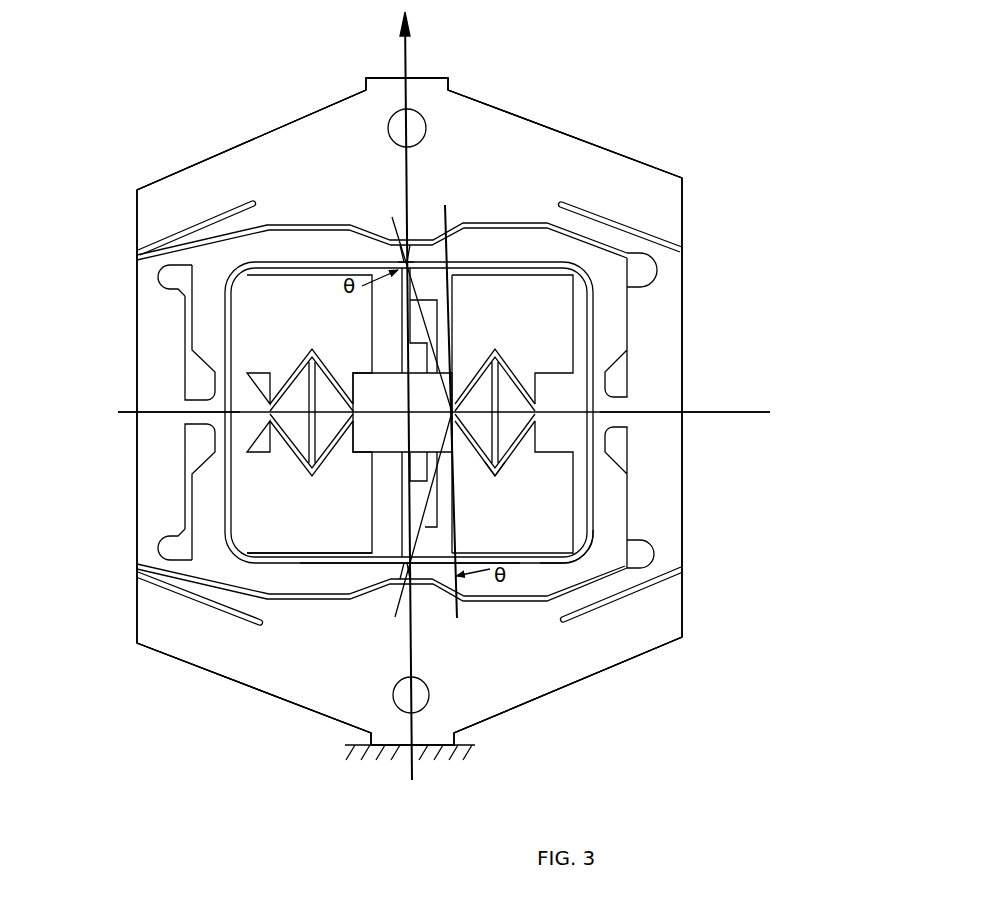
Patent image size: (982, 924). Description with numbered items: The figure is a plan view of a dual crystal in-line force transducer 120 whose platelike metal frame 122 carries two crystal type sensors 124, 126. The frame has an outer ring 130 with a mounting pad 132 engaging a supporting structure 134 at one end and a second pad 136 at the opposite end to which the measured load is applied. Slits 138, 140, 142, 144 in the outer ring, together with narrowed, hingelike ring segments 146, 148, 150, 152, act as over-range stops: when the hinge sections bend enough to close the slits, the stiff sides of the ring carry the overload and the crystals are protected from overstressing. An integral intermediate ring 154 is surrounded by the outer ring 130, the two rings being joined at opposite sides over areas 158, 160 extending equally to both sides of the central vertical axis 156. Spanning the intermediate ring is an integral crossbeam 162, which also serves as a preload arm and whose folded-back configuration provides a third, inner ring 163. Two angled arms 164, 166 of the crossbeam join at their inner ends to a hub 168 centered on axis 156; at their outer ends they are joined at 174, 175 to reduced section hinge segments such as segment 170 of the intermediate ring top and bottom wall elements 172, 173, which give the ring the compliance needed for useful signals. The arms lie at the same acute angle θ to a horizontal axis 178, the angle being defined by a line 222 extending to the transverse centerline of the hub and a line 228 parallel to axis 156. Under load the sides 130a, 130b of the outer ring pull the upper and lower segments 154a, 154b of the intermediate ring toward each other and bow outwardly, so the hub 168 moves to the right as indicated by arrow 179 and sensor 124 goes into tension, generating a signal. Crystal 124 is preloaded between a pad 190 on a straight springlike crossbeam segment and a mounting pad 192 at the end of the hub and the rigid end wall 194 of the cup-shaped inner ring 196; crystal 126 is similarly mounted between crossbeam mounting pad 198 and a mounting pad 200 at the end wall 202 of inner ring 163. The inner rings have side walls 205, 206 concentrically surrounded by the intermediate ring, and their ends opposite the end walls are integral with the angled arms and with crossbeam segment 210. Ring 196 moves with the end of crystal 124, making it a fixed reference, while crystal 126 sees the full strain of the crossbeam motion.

The transducer 120 is at (178, 57).
The metal frame 122 is at (535, 115).
The crystal type sensor 124 is at (300, 372).
The crystal type sensor 126 is at (462, 376).
The outer ring 130 is at (182, 160).
The side of outer ring 130a is at (135, 352).
The side of outer ring 130b is at (684, 352).
The mounting pad 132 is at (505, 731).
The supporting structure 134 is at (350, 745).
The second pad 136 is at (380, 78).
The slit 138 is at (600, 211).
The slit 140 is at (576, 612).
The slit 142 is at (193, 601).
The slit 144 is at (228, 221).
The hingelike ring segment 146 is at (660, 272).
The hingelike ring segment 148 is at (660, 548).
The hingelike ring segment 150 is at (155, 548).
The hingelike ring segment 152 is at (152, 272).
The intermediate ring 154 is at (512, 216).
The upper segment of intermediate ring 154a is at (320, 225).
The lower segment of intermediate ring 154b is at (290, 601).
The central vertical axis 156 is at (404, 165).
The joining area 158 is at (468, 290).
The joining area 160 is at (706, 408).
The crossbeam 162 is at (366, 488).
The inner ring 163 is at (590, 500).
The angled arm 164 is at (437, 310).
The angled arm 166 is at (438, 515).
The hub 168 is at (402, 412).
The hinge segment 170 is at (399, 249).
The top wall element 172 is at (432, 398).
The bottom wall element 173 is at (535, 594).
The joint 174 is at (400, 262).
The joint 175 is at (404, 560).
The horizontal axis 178 is at (175, 410).
The arrow 179 is at (440, 412).
The pad 190 is at (356, 372).
The mounting pad 192 is at (250, 366).
The end wall 194 is at (230, 492).
The inner ring 196 is at (410, 565).
The crossbeam mounting pad 198 is at (493, 477).
The mounting pad 200 is at (556, 373).
The end wall 202 is at (592, 318).
The side wall 205 is at (270, 262).
The side wall 206 is at (527, 563).
The crossbeam segment 210 is at (366, 540).
The line 222 is at (266, 136).
The line 228 is at (445, 540).